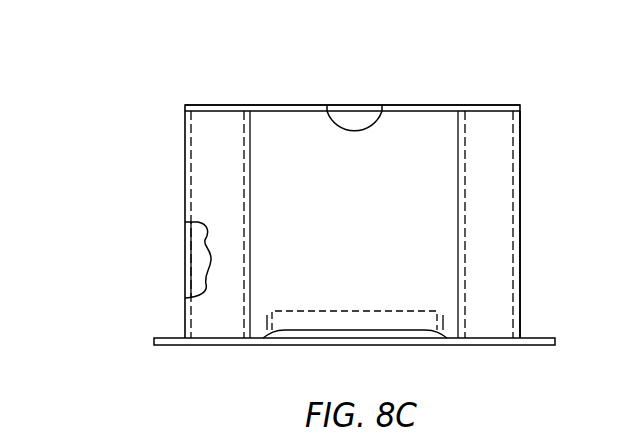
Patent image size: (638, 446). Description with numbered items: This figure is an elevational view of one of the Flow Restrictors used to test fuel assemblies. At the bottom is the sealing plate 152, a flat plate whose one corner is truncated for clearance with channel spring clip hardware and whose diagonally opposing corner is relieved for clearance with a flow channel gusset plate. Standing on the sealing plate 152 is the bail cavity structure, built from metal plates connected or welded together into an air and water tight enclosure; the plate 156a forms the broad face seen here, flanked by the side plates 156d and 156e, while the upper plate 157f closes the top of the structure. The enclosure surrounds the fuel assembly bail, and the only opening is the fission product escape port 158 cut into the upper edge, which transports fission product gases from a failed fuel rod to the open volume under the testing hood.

The sealing plate 152 is at (210, 346).
The metal plate 156a is at (332, 224).
The metal plate 156d is at (207, 195).
The metal plate 156e is at (487, 203).
The top wall 157f is at (427, 105).
The fission product escape port 158 is at (341, 106).